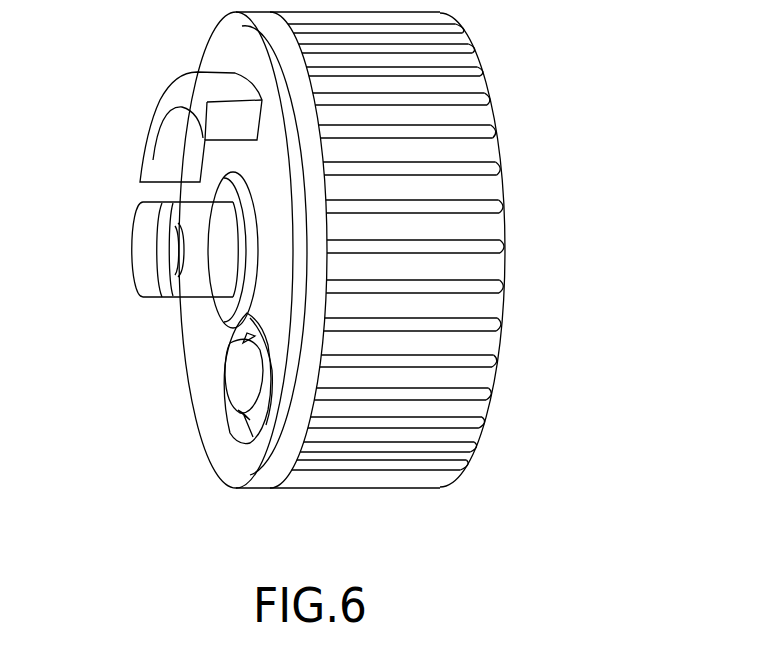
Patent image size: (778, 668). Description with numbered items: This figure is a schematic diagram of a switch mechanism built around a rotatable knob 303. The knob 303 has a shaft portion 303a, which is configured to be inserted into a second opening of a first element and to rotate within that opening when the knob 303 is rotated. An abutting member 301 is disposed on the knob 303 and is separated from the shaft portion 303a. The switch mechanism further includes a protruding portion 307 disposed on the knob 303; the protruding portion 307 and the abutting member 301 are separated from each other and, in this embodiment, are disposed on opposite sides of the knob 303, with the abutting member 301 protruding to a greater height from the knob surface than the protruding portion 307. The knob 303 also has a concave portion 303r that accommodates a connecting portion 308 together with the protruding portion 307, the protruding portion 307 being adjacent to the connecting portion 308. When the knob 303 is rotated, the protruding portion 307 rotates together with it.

The abutting member 301 is at (172, 95).
The knob 303 is at (483, 103).
The shaft portion 303a is at (145, 242).
The concave portion 303r is at (238, 430).
The protruding portion 307 is at (233, 378).
The connecting portion 308 is at (263, 407).